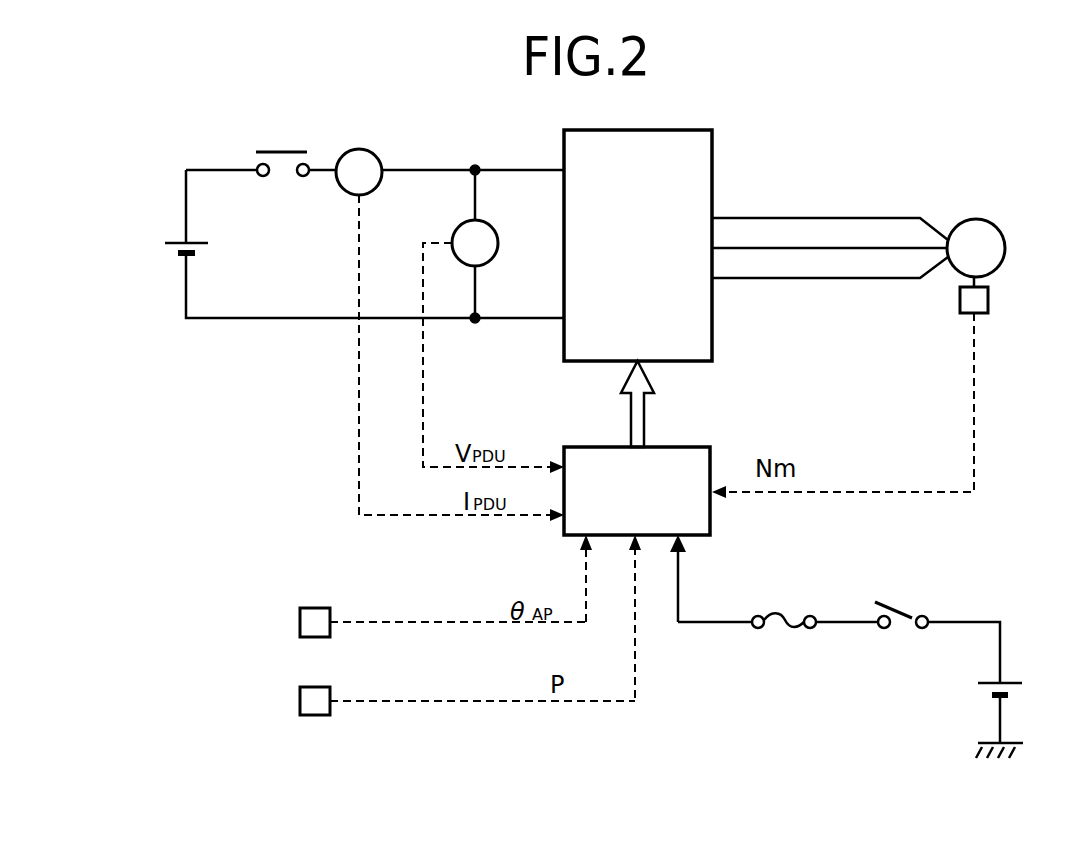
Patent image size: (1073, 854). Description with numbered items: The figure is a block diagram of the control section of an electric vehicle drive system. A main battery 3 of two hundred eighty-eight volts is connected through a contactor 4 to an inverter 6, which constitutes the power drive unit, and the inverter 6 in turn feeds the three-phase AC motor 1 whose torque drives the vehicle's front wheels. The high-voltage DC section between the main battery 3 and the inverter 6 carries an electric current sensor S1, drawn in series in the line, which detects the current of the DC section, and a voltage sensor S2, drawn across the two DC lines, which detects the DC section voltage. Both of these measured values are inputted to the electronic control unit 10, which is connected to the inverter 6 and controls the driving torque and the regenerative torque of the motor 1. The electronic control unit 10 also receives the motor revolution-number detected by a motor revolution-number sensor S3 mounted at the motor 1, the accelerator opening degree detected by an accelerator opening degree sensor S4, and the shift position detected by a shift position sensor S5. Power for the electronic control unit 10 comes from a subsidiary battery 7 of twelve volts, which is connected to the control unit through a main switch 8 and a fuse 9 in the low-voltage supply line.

The three-phase AC motor 1 is at (997, 223).
The main battery 3 is at (207, 247).
The contactor 4 is at (283, 153).
The inverter 6 is at (713, 168).
The subsidiary battery 7 is at (978, 686).
The main switch 8 is at (897, 603).
The fuse 9 is at (773, 613).
The electronic control unit 10 is at (697, 447).
The electric current sensor S1 is at (376, 154).
The voltage sensor S2 is at (497, 236).
The motor revolution-number sensor S3 is at (988, 298).
The accelerator opening degree sensor S4 is at (300, 626).
The shift position sensor S5 is at (300, 702).